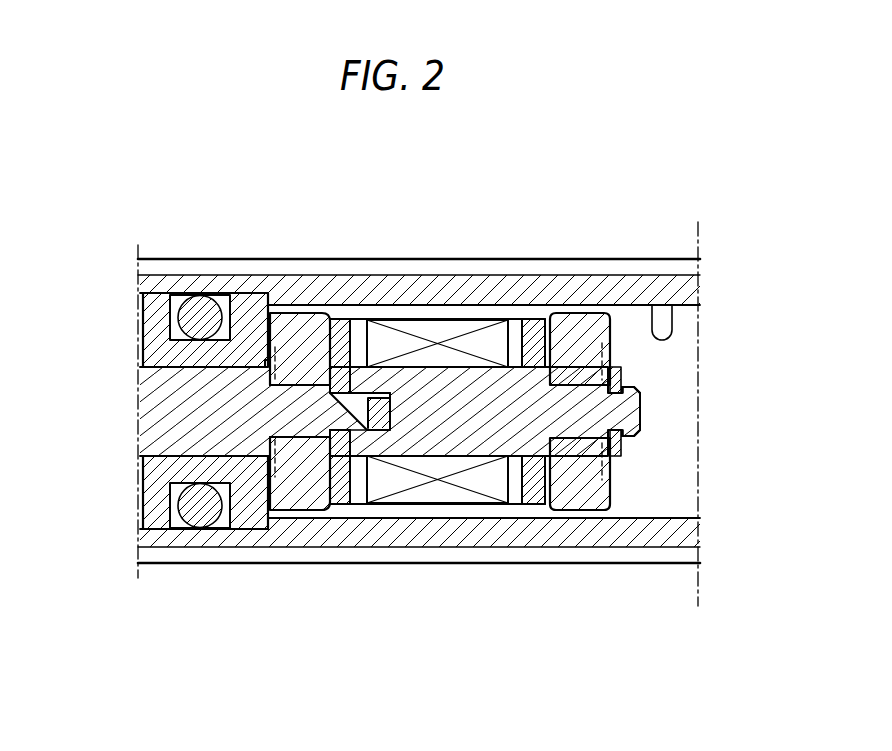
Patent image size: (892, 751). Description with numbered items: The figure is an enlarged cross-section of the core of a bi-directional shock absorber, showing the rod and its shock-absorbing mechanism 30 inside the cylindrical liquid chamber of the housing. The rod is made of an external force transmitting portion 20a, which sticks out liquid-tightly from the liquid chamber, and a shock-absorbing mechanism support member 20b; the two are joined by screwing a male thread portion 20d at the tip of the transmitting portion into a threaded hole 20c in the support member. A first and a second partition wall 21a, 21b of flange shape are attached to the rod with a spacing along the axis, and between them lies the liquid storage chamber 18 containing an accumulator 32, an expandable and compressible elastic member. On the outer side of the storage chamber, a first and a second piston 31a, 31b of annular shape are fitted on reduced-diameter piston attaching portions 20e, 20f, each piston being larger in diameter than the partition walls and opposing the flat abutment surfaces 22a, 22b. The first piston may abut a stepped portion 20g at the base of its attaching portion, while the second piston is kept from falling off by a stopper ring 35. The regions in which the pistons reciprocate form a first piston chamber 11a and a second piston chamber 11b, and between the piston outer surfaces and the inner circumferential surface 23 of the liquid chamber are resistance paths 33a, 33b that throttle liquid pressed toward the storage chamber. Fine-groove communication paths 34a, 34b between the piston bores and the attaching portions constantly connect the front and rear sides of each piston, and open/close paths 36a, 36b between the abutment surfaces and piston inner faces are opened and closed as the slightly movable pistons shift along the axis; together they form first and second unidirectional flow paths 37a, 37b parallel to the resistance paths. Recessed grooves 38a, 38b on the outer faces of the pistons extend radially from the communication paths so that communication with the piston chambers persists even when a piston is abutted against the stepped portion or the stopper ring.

The first piston chamber 11a is at (248, 292).
The second piston chamber 11b is at (663, 368).
The liquid storage chamber 18 is at (490, 515).
The external force transmitting portion 20a is at (175, 400).
The shock-absorbing mechanism support member 20b is at (445, 435).
The threaded hole 20c is at (362, 400).
The male thread portion 20d is at (352, 418).
The piston attaching portion 20e is at (292, 352).
The piston attaching portion 20f is at (610, 413).
The stepped portion 20g is at (266, 438).
The first partition wall 21a is at (340, 332).
The second partition wall 21b is at (534, 332).
The abutment surface 22a is at (322, 332).
The abutment surface 22b is at (571, 305).
The inner circumferential surface 23 is at (678, 300).
The shock-absorbing mechanism 30 is at (502, 376).
The first piston 31a is at (297, 330).
The second piston 31b is at (592, 330).
The accumulator 32 is at (433, 332).
The resistance path 33a is at (345, 505).
The resistance path 33b is at (597, 512).
The communication path 34a is at (280, 490).
The communication path 34b is at (577, 478).
The stopper ring 35 is at (621, 450).
The open/close path 36a is at (302, 512).
The open/close path 36b is at (548, 482).
The first unidirectional flow path 37a is at (318, 665).
The second unidirectional flow path 37b is at (610, 648).
The recessed groove 38a is at (240, 508).
The recessed groove 38b is at (623, 442).